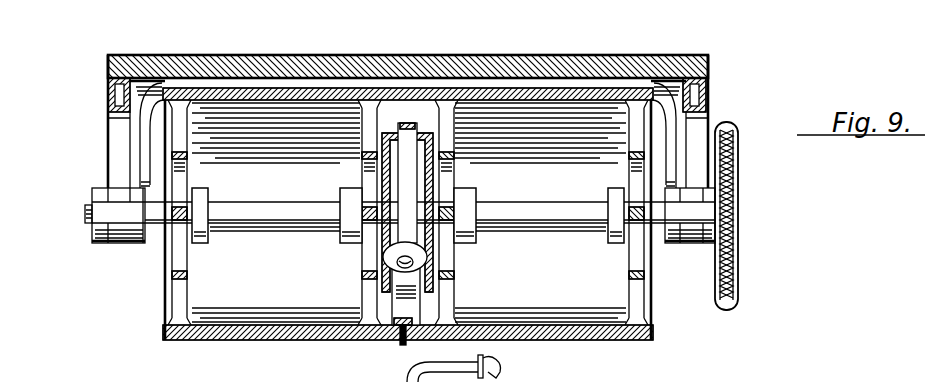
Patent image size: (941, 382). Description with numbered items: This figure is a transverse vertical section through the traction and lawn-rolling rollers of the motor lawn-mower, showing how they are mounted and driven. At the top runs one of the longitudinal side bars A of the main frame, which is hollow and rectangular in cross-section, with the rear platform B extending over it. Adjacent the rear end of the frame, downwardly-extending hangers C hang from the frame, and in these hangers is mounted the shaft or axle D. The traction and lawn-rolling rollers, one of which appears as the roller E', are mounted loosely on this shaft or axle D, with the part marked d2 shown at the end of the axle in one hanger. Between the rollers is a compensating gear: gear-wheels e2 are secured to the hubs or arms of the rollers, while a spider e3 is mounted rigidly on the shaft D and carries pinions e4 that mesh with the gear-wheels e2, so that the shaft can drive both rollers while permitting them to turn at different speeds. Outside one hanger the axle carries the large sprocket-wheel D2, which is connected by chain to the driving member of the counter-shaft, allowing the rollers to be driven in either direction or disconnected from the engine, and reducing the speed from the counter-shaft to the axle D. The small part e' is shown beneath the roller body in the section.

The longitudinal side bar A is at (108, 91).
The platform B is at (478, 22).
The hanger C is at (130, 129).
The shaft or axle D is at (587, 222).
The large sprocket-wheel D2 is at (737, 163).
The shaft journal d2 is at (85, 213).
The cylinder casing E' is at (408, 231).
The outlet pipe e' is at (442, 353).
The gear-wheel e2 is at (475, 255).
The spider e3 is at (402, 170).
The pinion e4 is at (388, 252).